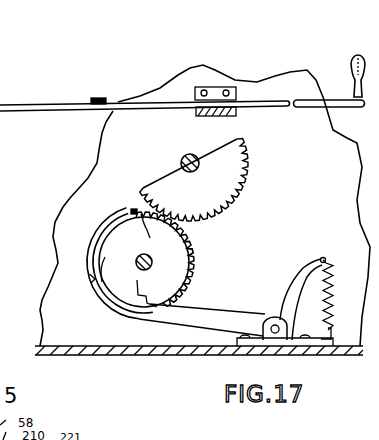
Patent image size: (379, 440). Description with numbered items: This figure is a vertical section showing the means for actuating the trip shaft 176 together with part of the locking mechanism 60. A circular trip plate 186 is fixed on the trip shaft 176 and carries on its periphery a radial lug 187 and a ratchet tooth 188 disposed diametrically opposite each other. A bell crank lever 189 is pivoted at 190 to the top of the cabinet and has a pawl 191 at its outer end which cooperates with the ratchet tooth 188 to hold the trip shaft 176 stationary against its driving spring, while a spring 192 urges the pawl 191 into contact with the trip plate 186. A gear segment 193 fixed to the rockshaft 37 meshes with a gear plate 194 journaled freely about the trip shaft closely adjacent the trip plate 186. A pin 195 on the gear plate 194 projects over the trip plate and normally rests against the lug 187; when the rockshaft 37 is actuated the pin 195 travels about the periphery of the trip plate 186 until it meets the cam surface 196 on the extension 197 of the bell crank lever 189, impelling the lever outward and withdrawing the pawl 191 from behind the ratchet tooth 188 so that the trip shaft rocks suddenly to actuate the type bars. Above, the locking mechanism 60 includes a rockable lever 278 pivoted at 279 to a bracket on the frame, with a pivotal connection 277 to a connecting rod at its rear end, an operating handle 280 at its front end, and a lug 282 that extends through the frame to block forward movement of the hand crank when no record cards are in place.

The pivotal connection 277 is at (0, 84).
The rockable lever 278 is at (85, 111).
The lug 282 is at (89, 98).
The locking mechanism 60 is at (204, 92).
The pivot 279 is at (237, 95).
The operating handle 280 is at (349, 68).
The rockshaft 37 is at (182, 158).
The gear segment 193 is at (249, 170).
The pin 195 is at (128, 210).
The radial lug 187 is at (159, 231).
The gear plate 194 is at (200, 238).
The cam surface 196 is at (116, 266).
The trip shaft 176 is at (153, 262).
The trip plate 186 is at (200, 259).
The ratchet tooth 188 is at (140, 295).
The bell crank lever 189 is at (212, 303).
The pivot 190 is at (271, 318).
The pawl 191 is at (155, 313).
The spring 192 is at (334, 289).
The extension 197 is at (101, 297).